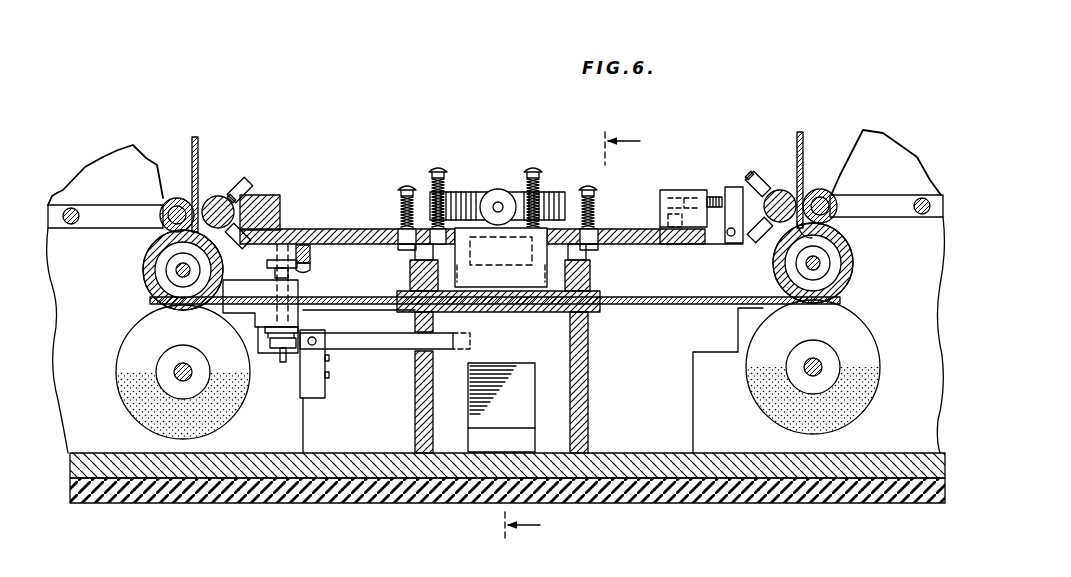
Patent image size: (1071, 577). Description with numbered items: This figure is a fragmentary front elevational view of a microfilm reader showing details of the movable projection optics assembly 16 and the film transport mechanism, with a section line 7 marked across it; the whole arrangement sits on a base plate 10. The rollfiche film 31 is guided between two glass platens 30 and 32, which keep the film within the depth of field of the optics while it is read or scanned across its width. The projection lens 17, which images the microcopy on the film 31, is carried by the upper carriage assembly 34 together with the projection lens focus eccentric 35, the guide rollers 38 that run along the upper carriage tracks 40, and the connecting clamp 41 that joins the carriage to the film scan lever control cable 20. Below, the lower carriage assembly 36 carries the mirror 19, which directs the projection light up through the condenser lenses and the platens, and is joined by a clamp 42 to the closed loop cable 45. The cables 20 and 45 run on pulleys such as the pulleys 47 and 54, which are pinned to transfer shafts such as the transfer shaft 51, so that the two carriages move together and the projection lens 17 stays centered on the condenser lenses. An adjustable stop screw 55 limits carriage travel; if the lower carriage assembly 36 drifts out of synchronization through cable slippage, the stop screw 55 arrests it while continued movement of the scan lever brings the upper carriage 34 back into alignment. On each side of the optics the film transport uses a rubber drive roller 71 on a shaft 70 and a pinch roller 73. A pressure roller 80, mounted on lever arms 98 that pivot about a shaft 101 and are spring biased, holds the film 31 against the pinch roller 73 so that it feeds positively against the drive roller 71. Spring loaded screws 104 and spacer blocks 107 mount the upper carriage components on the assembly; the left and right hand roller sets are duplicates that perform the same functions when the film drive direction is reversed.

The base plate 10 is at (298, 506).
The movable projection optics assembly 16 is at (365, 229).
The projection lens 17 is at (477, 192).
The mirror 19 is at (512, 364).
The film scan lever control cable 20 is at (260, 316).
The glass platen 30 is at (600, 322).
The film 31 is at (198, 142).
The glass platen 32 is at (602, 300).
The upper carriage assembly 34 is at (618, 230).
The projection lens focus eccentric 35 is at (503, 190).
The lower carriage assembly 36 is at (423, 401).
The guide rollers 38 is at (246, 184).
The upper carriage tracks 40 is at (219, 196).
The connecting clamp 41 is at (312, 258).
The clamp 42 is at (300, 376).
The closed loop cable 45 is at (265, 331).
The pulley 47 is at (283, 354).
The transfer shaft 51 is at (300, 290).
The pulley 54 is at (282, 262).
The stop screw 55 is at (340, 336).
The shaft 70 is at (178, 368).
The drive roller 71 is at (142, 418).
The pinch roller 73 is at (148, 280).
The pressure roller 80 is at (177, 197).
The lever arms 98 is at (135, 206).
The shaft 101 is at (70, 208).
The spring screw 104 is at (406, 186).
The spacer block 107 is at (412, 276).
The section line 7- 7 is at (581, 335).